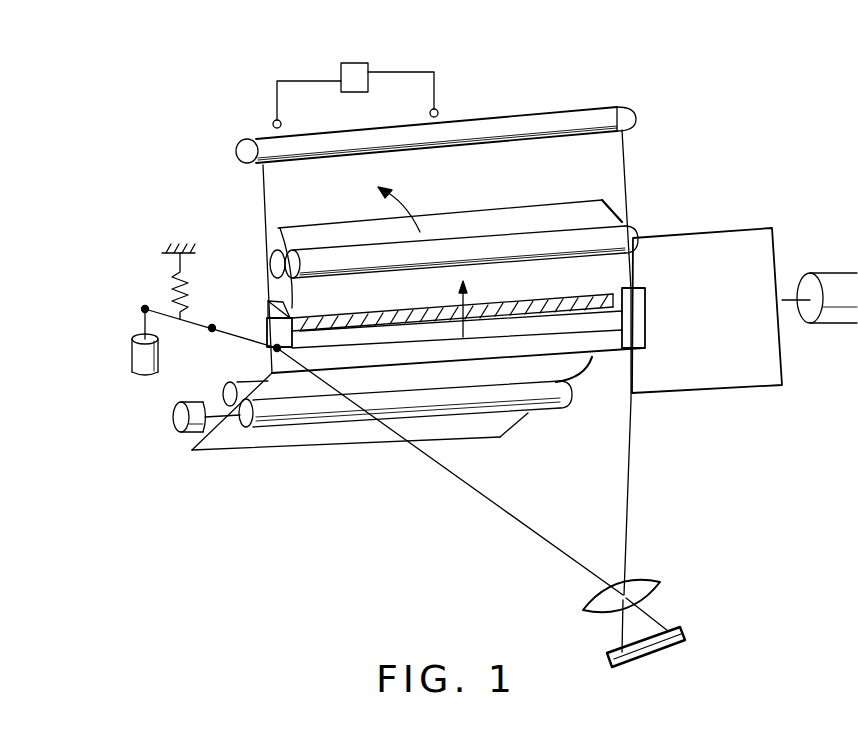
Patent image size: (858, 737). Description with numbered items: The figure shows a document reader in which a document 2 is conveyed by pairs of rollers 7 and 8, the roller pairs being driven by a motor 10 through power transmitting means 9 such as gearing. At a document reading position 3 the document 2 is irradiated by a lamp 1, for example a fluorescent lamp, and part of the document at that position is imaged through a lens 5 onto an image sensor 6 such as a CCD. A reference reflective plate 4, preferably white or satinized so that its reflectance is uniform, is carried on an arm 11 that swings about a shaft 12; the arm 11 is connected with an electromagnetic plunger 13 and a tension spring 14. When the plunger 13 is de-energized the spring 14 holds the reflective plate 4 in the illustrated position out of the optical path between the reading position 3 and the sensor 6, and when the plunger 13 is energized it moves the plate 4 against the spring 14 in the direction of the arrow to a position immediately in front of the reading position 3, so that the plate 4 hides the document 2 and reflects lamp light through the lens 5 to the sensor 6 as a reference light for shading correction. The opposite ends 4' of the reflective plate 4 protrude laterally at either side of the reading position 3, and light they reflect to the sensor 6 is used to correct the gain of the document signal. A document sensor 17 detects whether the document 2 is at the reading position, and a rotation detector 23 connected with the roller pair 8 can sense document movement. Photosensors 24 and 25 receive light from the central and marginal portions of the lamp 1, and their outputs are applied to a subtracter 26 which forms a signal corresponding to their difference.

The lamp 1 is at (598, 120).
The document 2 is at (560, 210).
The document reading position 3 is at (613, 283).
The reference reflective plate 4 is at (484, 342).
The protruding ends 4' is at (461, 318).
The lens 5 is at (648, 576).
The image sensor 6 is at (686, 630).
The roller pair 7 is at (638, 230).
The roller pair 8 is at (562, 410).
The power transmitting means 9 is at (777, 257).
The motor 10 is at (840, 320).
The arm 11 is at (262, 343).
The shaft 12 is at (210, 332).
The electromagnetic plunger 13 is at (131, 352).
The tension spring 14 is at (172, 272).
The document sensor 17 is at (270, 300).
The rotation detector 23 is at (181, 432).
The photosensor 24 is at (440, 112).
The photosensor 25 is at (272, 123).
The subtracter 26 is at (370, 63).